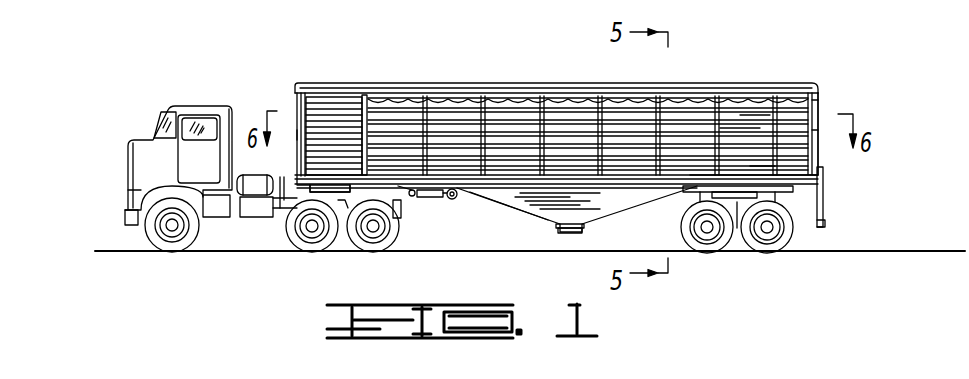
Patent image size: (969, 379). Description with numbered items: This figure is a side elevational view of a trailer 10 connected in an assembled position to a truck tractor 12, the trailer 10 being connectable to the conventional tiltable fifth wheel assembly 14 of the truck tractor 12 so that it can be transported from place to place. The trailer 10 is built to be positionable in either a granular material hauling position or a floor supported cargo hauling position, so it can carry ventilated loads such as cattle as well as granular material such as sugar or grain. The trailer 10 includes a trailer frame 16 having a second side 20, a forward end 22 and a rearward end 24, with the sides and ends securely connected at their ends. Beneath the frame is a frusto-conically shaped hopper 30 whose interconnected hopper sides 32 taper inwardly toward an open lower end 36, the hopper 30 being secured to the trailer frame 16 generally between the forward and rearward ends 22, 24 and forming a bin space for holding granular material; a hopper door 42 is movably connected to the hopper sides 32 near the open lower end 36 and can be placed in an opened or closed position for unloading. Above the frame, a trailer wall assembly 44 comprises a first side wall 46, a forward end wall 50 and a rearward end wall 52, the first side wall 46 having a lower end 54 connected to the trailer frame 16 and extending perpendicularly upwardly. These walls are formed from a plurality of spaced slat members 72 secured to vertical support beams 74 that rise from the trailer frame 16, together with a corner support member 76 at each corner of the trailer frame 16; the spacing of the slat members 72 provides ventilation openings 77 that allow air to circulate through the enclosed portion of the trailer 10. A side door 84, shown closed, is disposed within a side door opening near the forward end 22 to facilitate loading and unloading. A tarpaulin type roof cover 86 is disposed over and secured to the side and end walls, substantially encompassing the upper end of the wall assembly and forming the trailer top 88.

The trailer 10 is at (326, 78).
The truck tractor 12 is at (178, 106).
The fifth wheel assembly 14 is at (282, 198).
The trailer frame 16 is at (808, 190).
The second side 20 is at (672, 178).
The forward end 22 is at (265, 178).
The rearward end 24 is at (812, 186).
The hopper 30 is at (505, 212).
The hopper sides 32 is at (547, 203).
The open lower end 36 is at (582, 226).
The hopper door 42 is at (564, 233).
The trailer wall assembly 44 is at (824, 108).
The first side wall 46 is at (740, 132).
The forward end wall 50 is at (292, 100).
The rearward end wall 52 is at (823, 117).
The lower end 54 is at (403, 208).
The slat members 72 is at (517, 122).
The vertical support beams 74 is at (418, 125).
The corner support member 76 is at (297, 135).
The ventilation openings 77 is at (752, 115).
The side door 84 is at (331, 112).
The roof cover 86 is at (595, 93).
The trailer top 88 is at (483, 82).